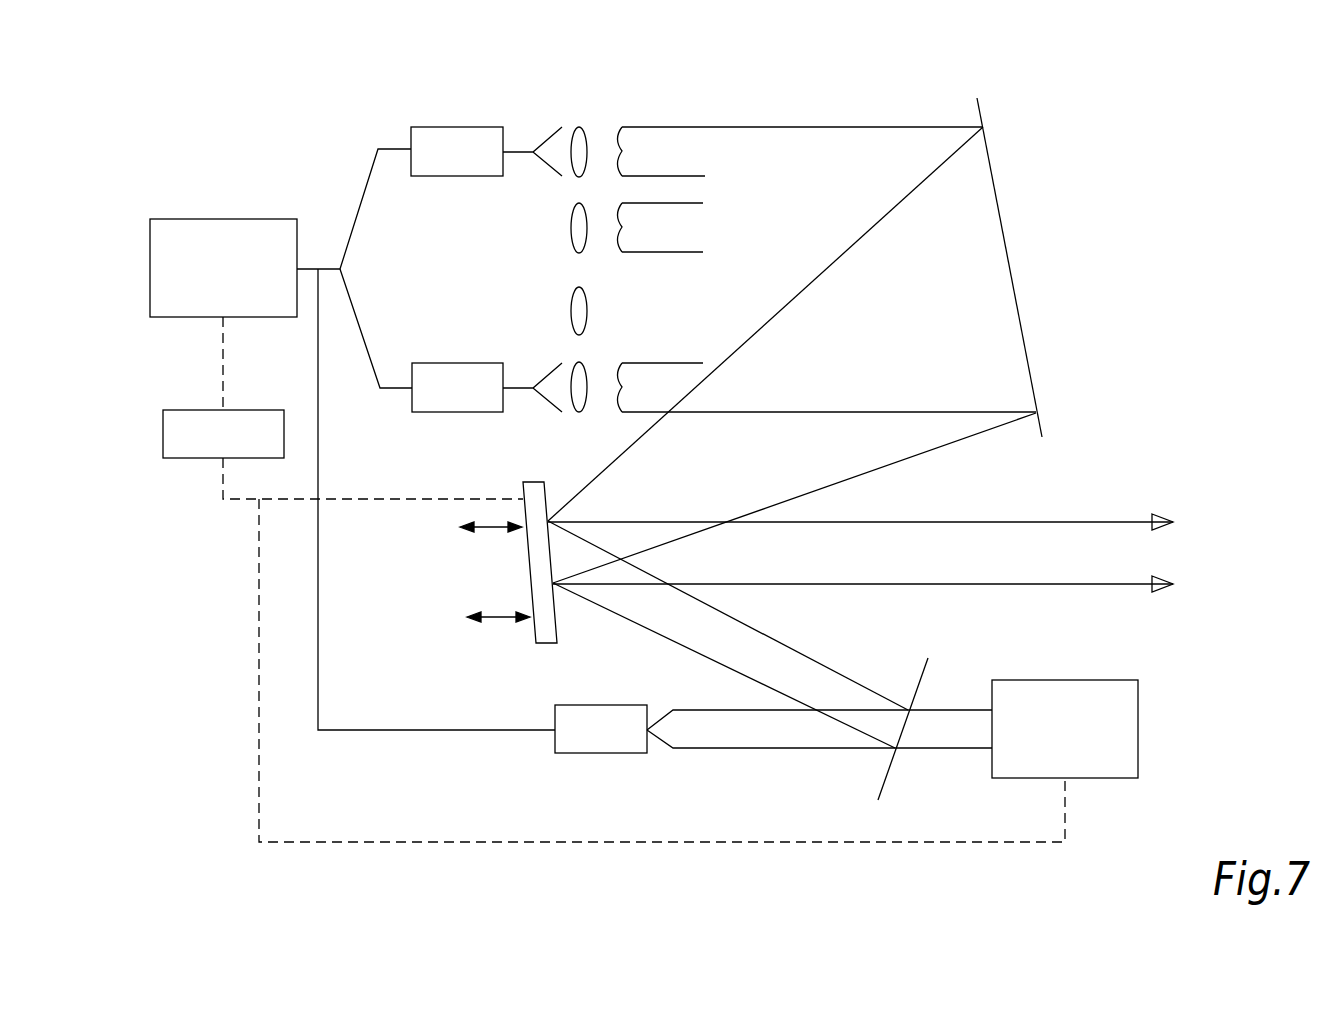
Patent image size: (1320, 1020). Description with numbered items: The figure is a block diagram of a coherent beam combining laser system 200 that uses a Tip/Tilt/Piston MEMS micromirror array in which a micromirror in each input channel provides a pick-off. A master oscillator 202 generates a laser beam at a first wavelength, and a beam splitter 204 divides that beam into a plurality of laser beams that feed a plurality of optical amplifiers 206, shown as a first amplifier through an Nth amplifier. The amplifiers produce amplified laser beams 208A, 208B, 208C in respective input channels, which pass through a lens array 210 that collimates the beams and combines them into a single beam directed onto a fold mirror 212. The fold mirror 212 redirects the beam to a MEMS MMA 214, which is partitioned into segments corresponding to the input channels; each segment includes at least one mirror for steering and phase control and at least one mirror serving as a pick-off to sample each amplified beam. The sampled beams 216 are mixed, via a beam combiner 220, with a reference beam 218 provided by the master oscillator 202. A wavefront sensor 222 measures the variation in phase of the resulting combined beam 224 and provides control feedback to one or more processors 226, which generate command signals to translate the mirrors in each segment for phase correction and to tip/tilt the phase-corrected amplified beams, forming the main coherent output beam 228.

The CBC laser system 200 is at (172, 76).
The master oscillator 202 is at (222, 219).
The beam splitter 204 is at (360, 208).
The optical amplifiers 206 is at (457, 127).
The amplified laser beam 208A is at (662, 127).
The amplified laser beam 208B is at (663, 254).
The amplified laser beam 208C is at (665, 363).
The lens array 210 is at (583, 90).
The fold mirror 212 is at (1000, 216).
The MEMS MMA 214 is at (533, 482).
The sampled beams 216 is at (640, 630).
The reference beam 218 is at (600, 755).
The beam combiner 220 is at (920, 668).
The wavefront sensor 222 is at (1140, 690).
The combined beam 224 is at (770, 751).
The processors 226 is at (163, 420).
The main coherent output beam 228 is at (998, 545).